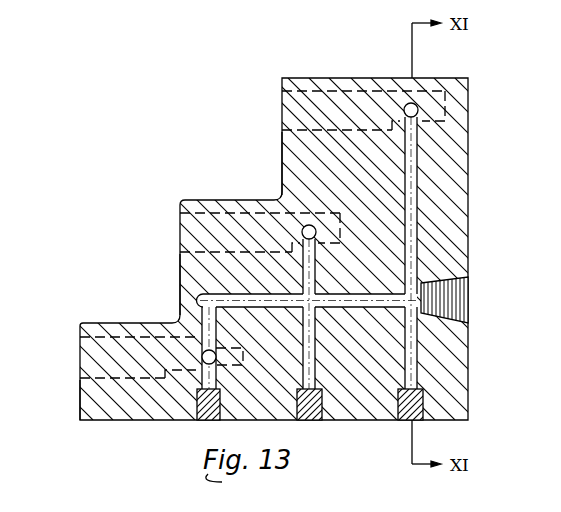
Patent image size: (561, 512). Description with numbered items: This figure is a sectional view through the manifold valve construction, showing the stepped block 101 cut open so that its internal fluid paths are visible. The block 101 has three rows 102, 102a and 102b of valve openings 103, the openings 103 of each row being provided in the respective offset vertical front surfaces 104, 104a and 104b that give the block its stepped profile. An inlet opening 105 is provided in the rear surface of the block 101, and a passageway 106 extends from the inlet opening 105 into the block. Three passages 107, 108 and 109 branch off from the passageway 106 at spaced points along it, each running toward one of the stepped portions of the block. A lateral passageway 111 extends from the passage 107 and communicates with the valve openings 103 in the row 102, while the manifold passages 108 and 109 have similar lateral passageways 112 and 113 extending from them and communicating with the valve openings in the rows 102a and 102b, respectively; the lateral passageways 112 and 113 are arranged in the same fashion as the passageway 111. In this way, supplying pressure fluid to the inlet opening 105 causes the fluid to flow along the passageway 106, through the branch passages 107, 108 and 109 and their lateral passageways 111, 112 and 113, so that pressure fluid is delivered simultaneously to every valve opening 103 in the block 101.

The stepped block 101 is at (423, 78).
The row of valve openings 102 is at (282, 117).
The row of valve openings 102a is at (180, 250).
The row of valve openings 102b is at (80, 360).
The valve openings 103 is at (283, 92).
The offset vertical front surface 104 is at (282, 156).
The offset vertical front surface 104a is at (180, 296).
The offset vertical front surface 104b is at (80, 411).
The inlet opening 105 is at (463, 280).
The passageway 106 is at (377, 303).
The passage 107 is at (412, 375).
The manifold passage 108 is at (313, 364).
The manifold passage 109 is at (219, 335).
The lateral passageway 111 is at (403, 105).
The lateral passageway 112 is at (317, 229).
The lateral passageway 113 is at (201, 356).